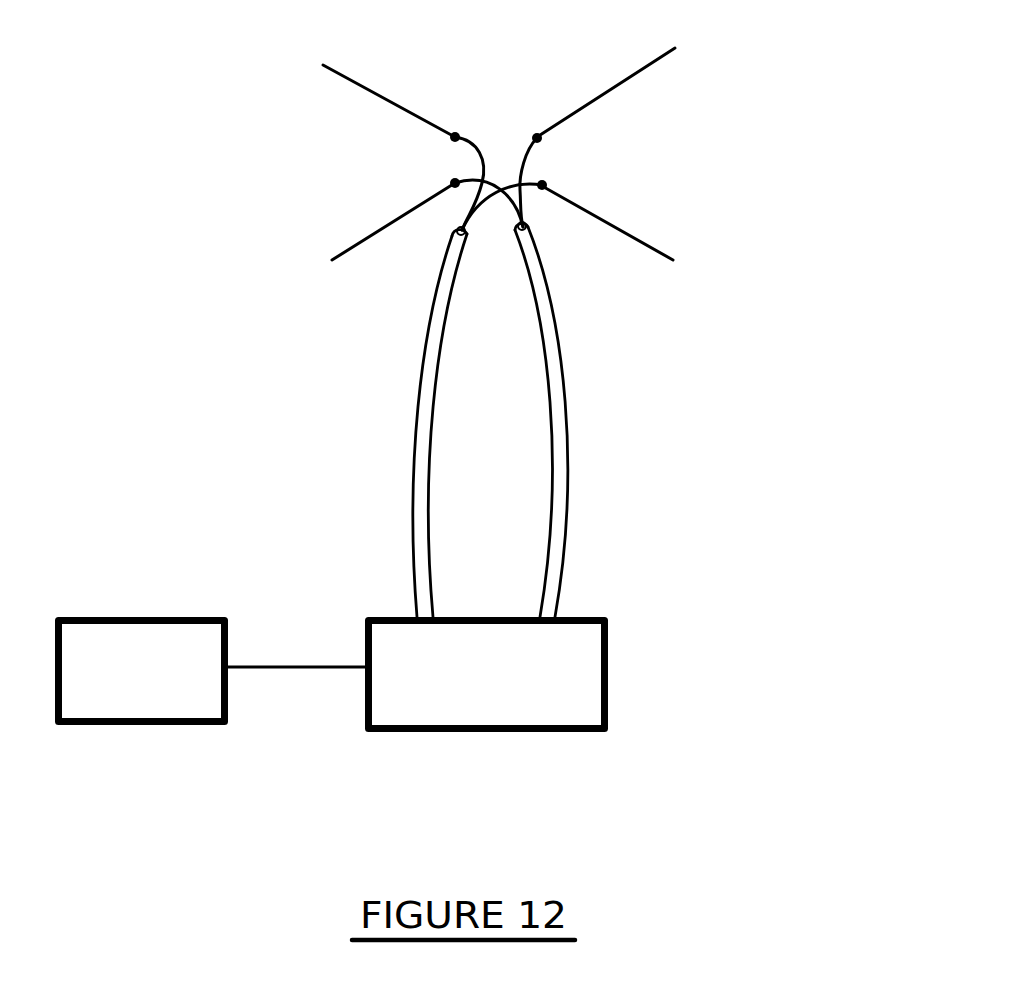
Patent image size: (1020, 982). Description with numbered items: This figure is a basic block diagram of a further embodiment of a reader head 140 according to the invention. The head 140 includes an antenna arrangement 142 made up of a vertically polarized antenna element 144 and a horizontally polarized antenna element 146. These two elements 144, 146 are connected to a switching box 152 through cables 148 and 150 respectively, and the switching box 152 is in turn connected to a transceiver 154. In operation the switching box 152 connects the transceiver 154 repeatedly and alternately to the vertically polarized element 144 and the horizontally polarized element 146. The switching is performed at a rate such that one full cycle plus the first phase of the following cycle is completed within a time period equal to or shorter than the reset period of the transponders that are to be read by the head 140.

The reader head 140 is at (722, 578).
The antenna arrangement 142 is at (573, 139).
The vertically polarized antenna element 144 is at (583, 103).
The horizontally polarized antenna element 146 is at (633, 223).
The cable 148 is at (562, 460).
The cable 150 is at (423, 465).
The switching box 152 is at (610, 673).
The transceiver 154 is at (118, 623).